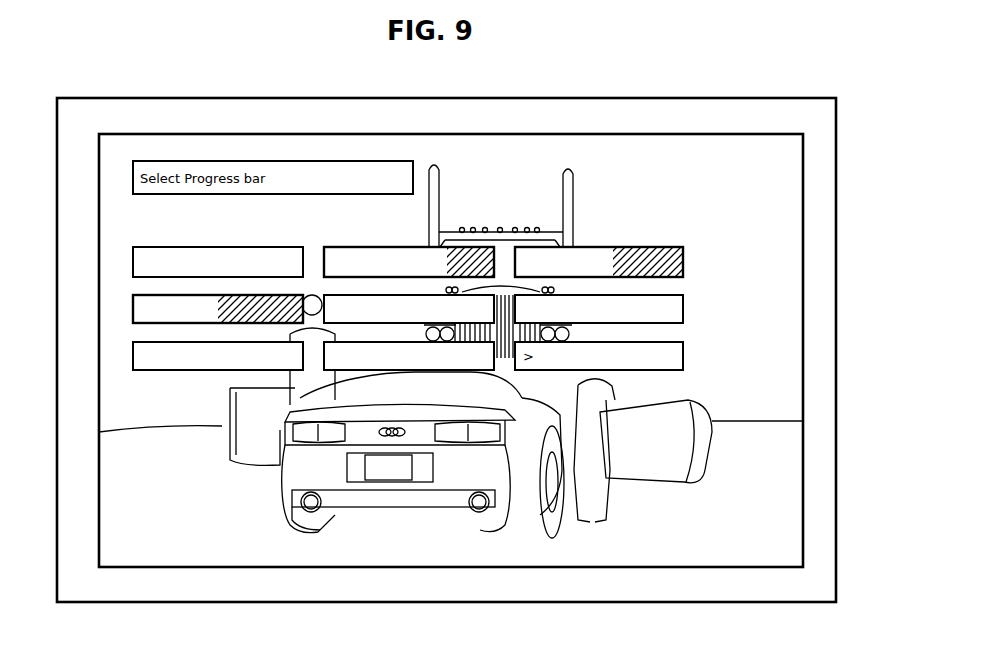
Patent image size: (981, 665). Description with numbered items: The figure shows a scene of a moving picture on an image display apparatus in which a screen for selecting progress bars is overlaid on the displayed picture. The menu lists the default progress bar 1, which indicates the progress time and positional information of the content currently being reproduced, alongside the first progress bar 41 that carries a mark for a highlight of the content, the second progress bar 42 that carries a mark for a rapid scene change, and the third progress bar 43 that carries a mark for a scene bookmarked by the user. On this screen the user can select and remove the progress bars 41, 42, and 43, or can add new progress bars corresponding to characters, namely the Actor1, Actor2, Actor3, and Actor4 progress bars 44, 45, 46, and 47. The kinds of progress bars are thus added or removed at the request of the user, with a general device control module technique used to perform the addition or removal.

The default progress bar 1 is at (133, 261).
The first progress bar 41 is at (133, 306).
The second progress bar 42 is at (457, 248).
The third progress bar 43 is at (622, 248).
The Actor1 progress bar 44 is at (473, 305).
The Actor2 progress bar 45 is at (637, 305).
The Actor3 progress bar 46 is at (228, 372).
The Actor4 progress bar 47 is at (422, 355).